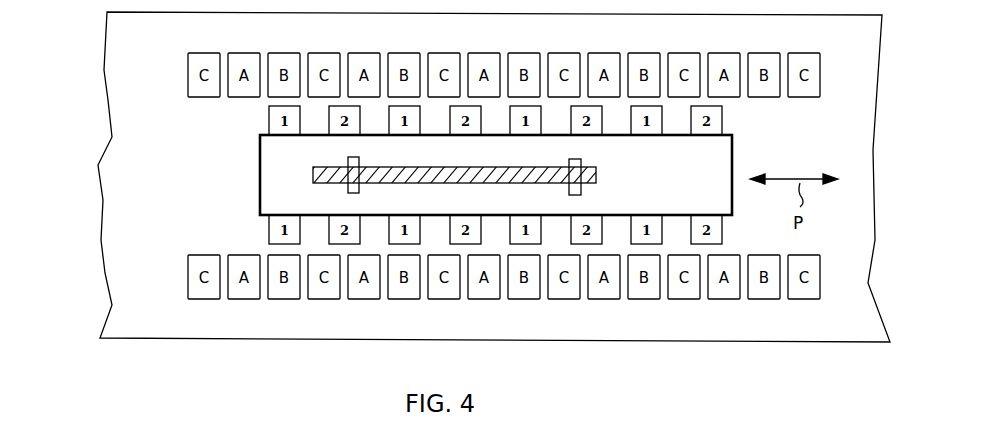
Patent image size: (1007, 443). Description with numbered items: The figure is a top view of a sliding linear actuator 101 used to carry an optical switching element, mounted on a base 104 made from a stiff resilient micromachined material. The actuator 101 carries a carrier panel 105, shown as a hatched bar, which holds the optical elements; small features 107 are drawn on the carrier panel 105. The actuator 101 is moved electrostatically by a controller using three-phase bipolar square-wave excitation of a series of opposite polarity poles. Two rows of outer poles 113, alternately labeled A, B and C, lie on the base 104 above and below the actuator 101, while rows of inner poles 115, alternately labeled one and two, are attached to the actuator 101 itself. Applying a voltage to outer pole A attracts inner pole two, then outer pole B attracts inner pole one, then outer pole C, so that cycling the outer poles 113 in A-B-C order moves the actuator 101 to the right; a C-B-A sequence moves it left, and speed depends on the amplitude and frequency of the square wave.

The actuator 101 is at (262, 191).
The base 104 is at (112, 137).
The carrier panel 105 is at (597, 175).
The sensor / detector 107 is at (360, 185).
The outer poles 113 is at (160, 71).
The inner poles 115 is at (241, 122).